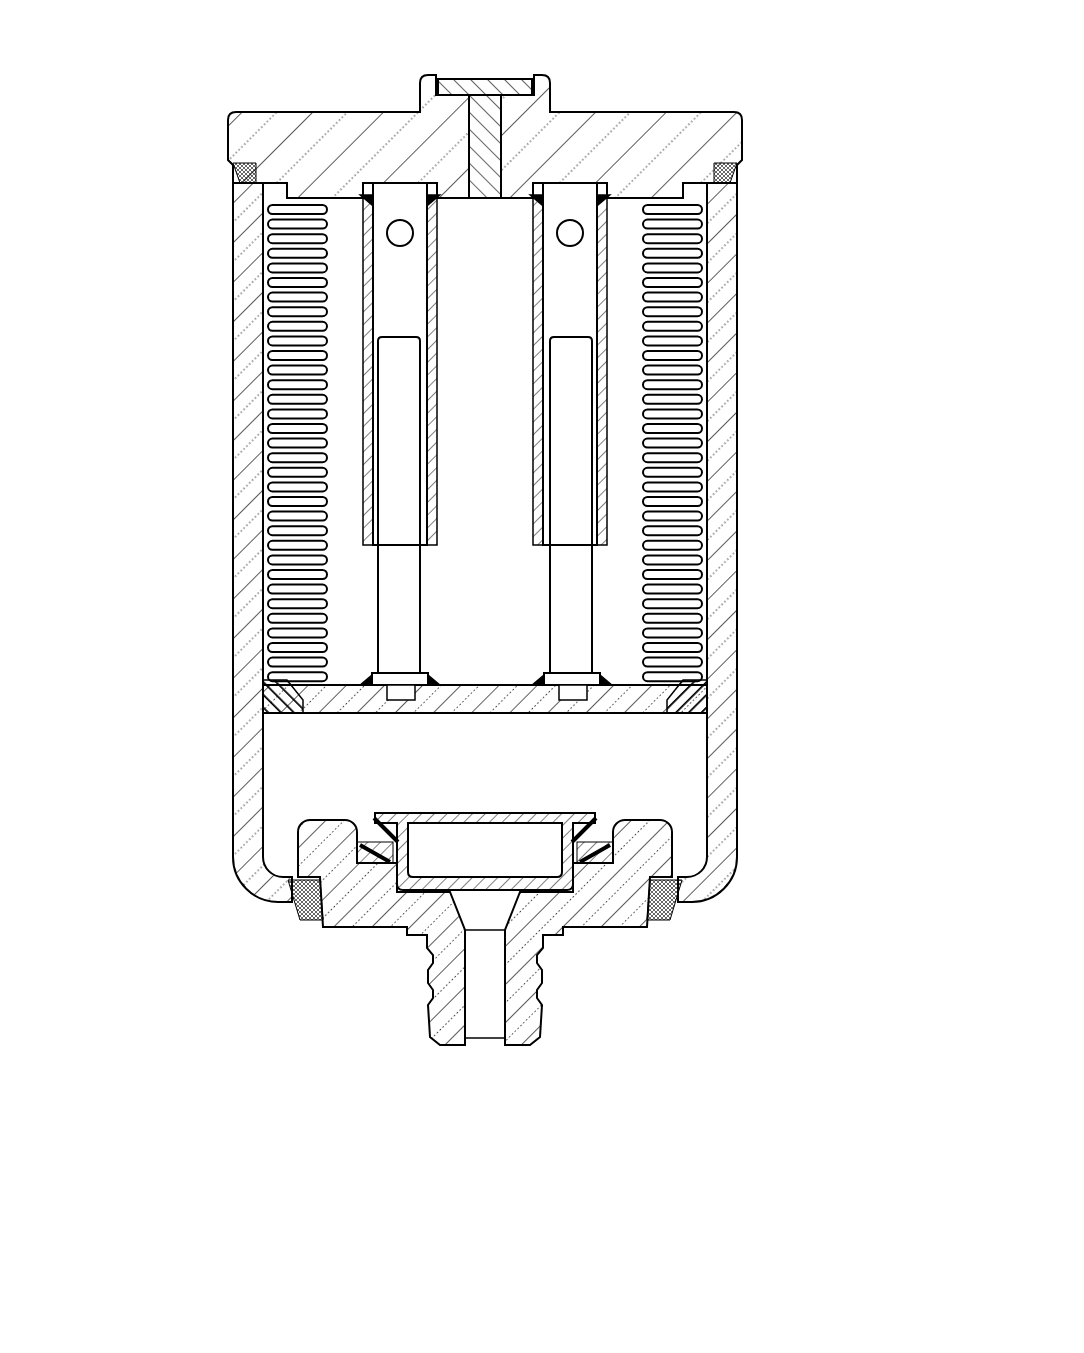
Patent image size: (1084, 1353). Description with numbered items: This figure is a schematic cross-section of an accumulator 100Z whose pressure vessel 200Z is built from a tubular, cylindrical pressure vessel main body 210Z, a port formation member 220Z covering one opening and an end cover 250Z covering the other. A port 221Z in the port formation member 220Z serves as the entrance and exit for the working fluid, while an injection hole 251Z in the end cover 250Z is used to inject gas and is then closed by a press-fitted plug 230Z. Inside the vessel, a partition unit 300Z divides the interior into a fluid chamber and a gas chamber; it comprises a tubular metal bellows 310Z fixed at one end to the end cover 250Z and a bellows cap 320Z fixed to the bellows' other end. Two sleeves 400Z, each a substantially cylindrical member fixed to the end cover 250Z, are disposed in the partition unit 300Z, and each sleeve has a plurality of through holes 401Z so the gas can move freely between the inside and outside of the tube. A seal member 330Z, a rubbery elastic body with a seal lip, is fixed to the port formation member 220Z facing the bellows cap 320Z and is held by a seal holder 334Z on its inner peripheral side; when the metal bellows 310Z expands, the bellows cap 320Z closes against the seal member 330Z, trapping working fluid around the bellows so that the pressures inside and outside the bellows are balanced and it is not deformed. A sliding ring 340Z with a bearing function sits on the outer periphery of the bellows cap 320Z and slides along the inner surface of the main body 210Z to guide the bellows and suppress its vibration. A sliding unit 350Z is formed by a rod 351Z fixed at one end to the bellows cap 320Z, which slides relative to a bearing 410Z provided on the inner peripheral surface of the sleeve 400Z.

The accumulator 100Z is at (872, 53).
The pressure vessel 200Z is at (216, 597).
The pressure vessel main body 210Z is at (237, 424).
The port formation member 220Z is at (338, 952).
The port 221Z is at (498, 1020).
The plug 230Z is at (476, 100).
The end cover 250Z is at (298, 93).
The injection hole 251Z is at (499, 152).
The partition unit 300Z is at (330, 731).
The metal bellows 310Z is at (702, 410).
The bellows cap 320Z is at (630, 707).
The seal member 330Z is at (597, 817).
The seal holder 334Z is at (570, 892).
The sliding ring 340Z is at (700, 686).
The sliding unit 350Z is at (624, 584).
The rod 351Z is at (577, 640).
The sleeve 400Z is at (628, 323).
The through hole 401Z is at (607, 237).
The bearing 410Z is at (600, 497).